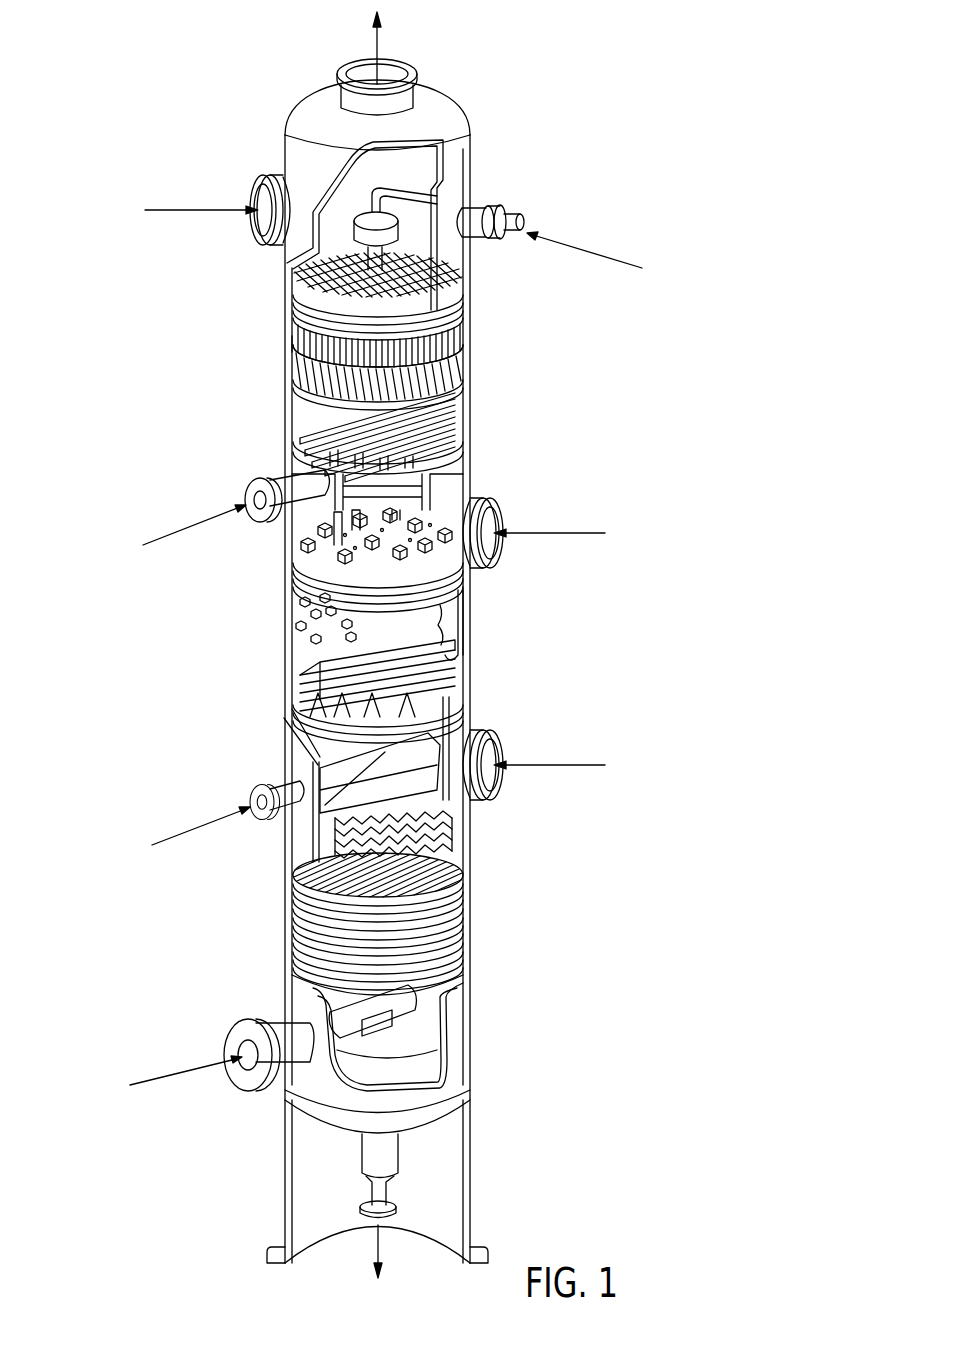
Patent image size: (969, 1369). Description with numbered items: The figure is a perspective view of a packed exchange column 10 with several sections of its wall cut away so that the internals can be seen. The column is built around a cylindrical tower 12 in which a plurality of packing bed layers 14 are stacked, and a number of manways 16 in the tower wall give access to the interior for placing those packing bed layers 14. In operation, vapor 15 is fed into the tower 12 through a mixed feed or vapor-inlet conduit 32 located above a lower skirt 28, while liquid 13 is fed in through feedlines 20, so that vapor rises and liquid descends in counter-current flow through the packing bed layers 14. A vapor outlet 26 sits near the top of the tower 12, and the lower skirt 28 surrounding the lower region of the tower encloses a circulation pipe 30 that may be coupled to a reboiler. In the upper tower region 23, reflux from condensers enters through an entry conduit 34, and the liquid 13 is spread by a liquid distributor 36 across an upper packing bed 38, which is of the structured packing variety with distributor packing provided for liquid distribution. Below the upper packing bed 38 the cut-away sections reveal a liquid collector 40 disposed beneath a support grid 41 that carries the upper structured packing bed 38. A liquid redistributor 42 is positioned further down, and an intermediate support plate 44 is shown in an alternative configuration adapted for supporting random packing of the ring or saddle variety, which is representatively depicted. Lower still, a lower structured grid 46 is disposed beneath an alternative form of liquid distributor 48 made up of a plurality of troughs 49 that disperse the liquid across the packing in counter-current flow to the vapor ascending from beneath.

The exchange column 10 is at (520, 138).
The cylindrical tower 12 is at (460, 148).
The liquid 13 is at (577, 243).
The packing bed layers 14 is at (452, 340).
The vapor 15 is at (292, 740).
The manways 16 is at (257, 182).
The feedlines 20 is at (277, 483).
The upper tower region 23 is at (275, 348).
The vapor outlet 26 is at (395, 65).
The lower skirt 28 is at (450, 1197).
The circulation pipe 30 is at (395, 1160).
The vapor-inlet conduit 32 is at (270, 1025).
The entry conduit 34 is at (471, 212).
The liquid distributor 36 is at (292, 280).
The upper packing bed 38 is at (292, 336).
The liquid collector 40 is at (455, 415).
The support grid 41 is at (456, 372).
The liquid redistributor 42 is at (300, 550).
The intermediate support plate 44 is at (300, 690).
The lower structured grid 46 is at (292, 920).
The liquid distributor 48 is at (440, 835).
The troughs 49 is at (455, 848).